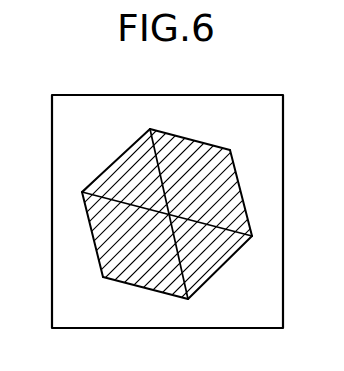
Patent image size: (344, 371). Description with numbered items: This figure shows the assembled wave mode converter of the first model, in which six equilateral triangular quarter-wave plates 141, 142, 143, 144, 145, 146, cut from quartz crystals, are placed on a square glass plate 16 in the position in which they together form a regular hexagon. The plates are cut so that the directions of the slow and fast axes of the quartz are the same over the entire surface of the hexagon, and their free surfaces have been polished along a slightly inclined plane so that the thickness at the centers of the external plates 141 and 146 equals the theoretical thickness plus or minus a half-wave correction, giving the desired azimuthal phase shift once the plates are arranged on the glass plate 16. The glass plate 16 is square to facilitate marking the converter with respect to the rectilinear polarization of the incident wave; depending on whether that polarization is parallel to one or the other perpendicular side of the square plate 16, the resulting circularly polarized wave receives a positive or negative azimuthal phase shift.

The glass plate 16 is at (284, 114).
The equilateral triangular quarter-wave plate 141 is at (148, 282).
The equilateral triangular quarter-wave plate 142 is at (222, 253).
The equilateral triangular quarter-wave plate 143 is at (228, 170).
The equilateral triangular quarter-wave plate 144 is at (185, 147).
The equilateral triangular quarter-wave plate 145 is at (108, 168).
The equilateral triangular quarter-wave plate 146 is at (100, 231).